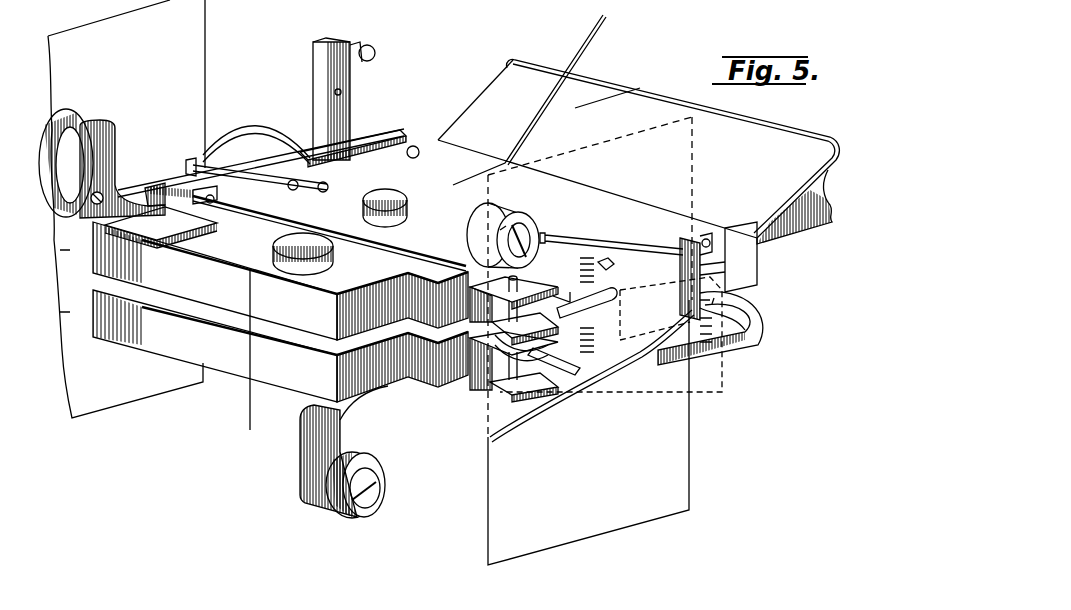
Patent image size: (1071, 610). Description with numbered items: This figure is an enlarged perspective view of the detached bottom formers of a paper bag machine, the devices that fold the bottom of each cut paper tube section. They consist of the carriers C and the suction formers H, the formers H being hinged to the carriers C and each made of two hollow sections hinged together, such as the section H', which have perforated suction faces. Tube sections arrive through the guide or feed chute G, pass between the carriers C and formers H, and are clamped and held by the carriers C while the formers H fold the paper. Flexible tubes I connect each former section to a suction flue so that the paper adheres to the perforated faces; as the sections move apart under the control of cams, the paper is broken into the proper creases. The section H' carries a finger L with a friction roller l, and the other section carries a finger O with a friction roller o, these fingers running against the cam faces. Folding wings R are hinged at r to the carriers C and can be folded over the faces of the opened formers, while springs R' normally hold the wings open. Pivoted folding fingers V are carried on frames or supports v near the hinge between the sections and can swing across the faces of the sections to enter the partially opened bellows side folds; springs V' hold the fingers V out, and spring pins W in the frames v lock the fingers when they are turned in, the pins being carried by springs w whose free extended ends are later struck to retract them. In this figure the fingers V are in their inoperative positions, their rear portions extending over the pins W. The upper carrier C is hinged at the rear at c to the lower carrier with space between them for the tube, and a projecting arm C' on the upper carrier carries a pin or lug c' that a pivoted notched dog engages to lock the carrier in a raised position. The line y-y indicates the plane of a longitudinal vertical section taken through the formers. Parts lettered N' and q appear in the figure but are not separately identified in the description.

The folding wings R is at (386, 282).
The springs R' is at (712, 329).
The finger L is at (108, 140).
The friction roller l is at (80, 118).
The carriers C is at (329, 215).
The projecting arm C' is at (322, 99).
The pin or lug c' is at (353, 95).
The guide or feed chute G is at (608, 98).
The section line y- y is at (640, 88).
The suction formers H is at (54, 289).
The hollow section of former H' is at (280, 304).
The flexible tubes I is at (330, 232).
The finger O is at (478, 224).
The friction roller o is at (518, 228).
The frames or supports v is at (611, 244).
The pivoted folding fingers V is at (504, 346).
The springs V' is at (411, 239).
The spring pins W is at (472, 400).
The springs w is at (496, 416).
The cable N' is at (592, 350).
The hinge r is at (706, 240).
The plate q is at (728, 263).
The hinge c is at (721, 262).